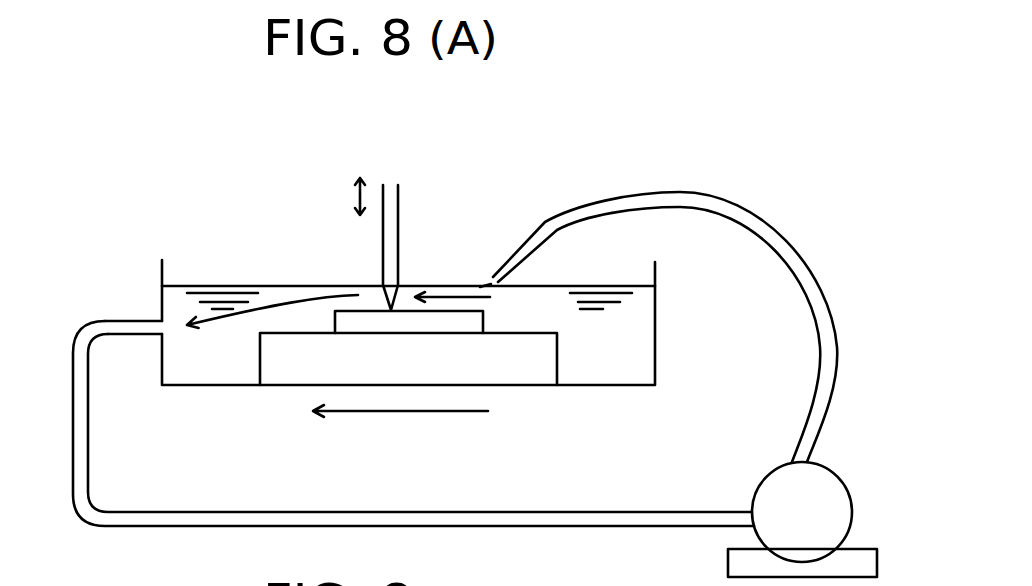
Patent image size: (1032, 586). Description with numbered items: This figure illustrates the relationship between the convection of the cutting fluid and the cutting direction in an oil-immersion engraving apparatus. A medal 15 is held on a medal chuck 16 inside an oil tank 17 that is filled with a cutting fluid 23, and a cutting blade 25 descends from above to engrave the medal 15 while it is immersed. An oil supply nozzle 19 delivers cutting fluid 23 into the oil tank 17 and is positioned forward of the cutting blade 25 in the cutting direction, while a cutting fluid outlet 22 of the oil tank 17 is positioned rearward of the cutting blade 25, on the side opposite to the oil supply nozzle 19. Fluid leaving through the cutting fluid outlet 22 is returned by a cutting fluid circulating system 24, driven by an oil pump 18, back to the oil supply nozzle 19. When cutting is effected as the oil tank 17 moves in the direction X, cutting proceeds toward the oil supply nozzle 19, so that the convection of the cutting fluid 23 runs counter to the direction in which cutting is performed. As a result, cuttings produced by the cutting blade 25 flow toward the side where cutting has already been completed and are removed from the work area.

The medal 15 is at (488, 323).
The medal chuck 16 is at (530, 378).
The oil tank 17 is at (205, 388).
The oil pump 18 is at (850, 512).
The oil supply nozzle 19 is at (505, 262).
The cutting fluid outlet 22 is at (160, 321).
The cutting fluid 23 is at (637, 337).
The cutting fluid circulating system 24 is at (525, 512).
The cutting blade 25 is at (383, 245).